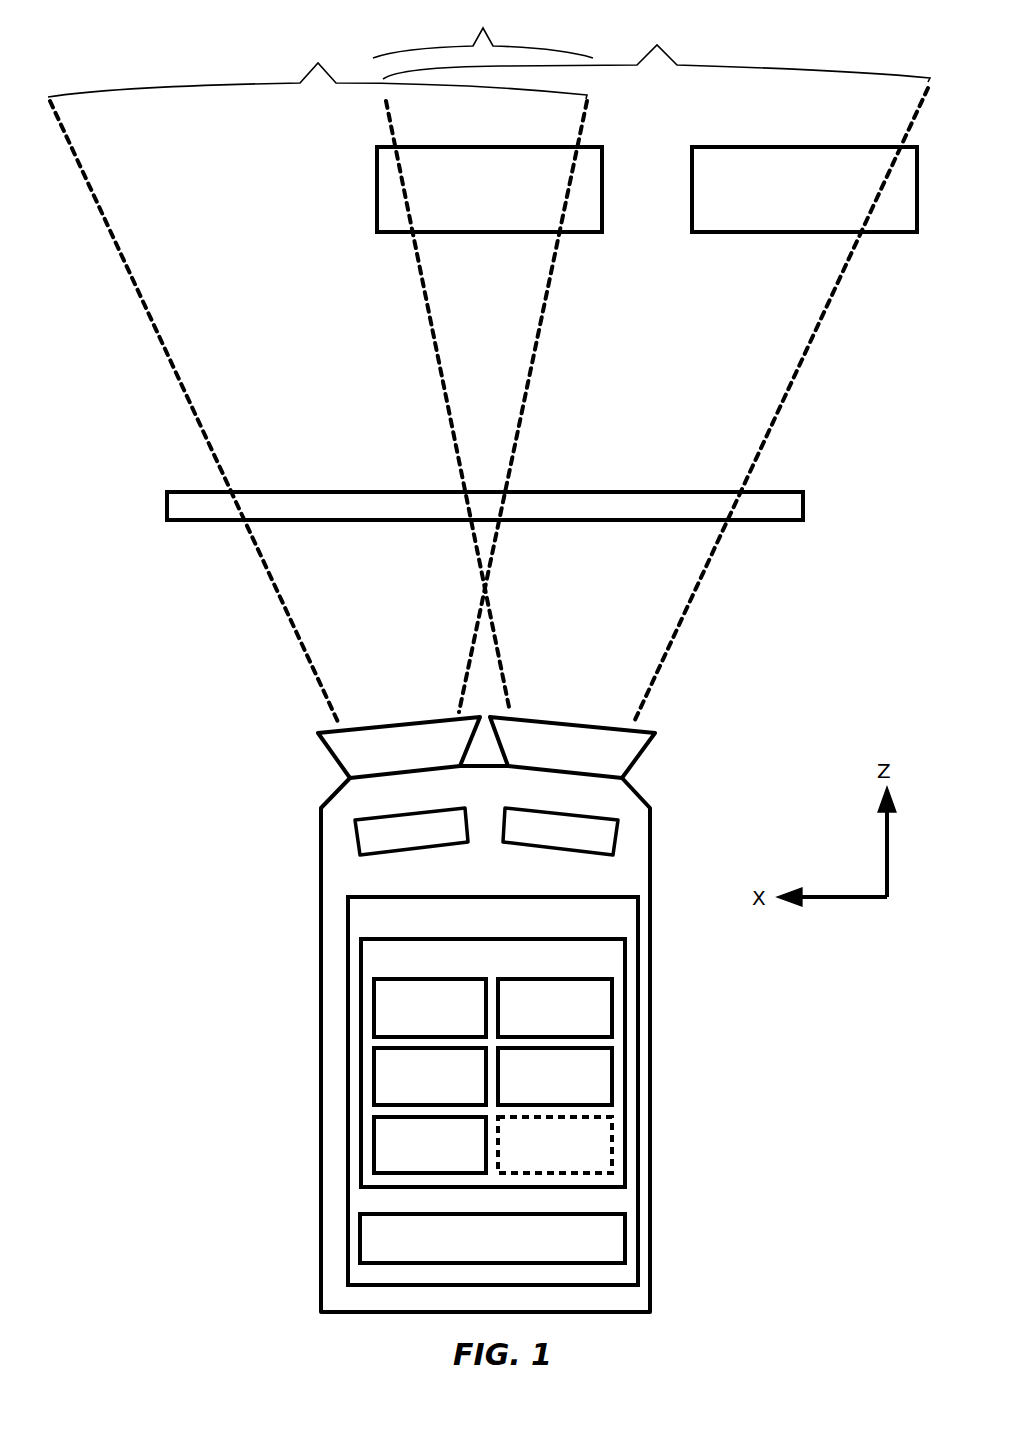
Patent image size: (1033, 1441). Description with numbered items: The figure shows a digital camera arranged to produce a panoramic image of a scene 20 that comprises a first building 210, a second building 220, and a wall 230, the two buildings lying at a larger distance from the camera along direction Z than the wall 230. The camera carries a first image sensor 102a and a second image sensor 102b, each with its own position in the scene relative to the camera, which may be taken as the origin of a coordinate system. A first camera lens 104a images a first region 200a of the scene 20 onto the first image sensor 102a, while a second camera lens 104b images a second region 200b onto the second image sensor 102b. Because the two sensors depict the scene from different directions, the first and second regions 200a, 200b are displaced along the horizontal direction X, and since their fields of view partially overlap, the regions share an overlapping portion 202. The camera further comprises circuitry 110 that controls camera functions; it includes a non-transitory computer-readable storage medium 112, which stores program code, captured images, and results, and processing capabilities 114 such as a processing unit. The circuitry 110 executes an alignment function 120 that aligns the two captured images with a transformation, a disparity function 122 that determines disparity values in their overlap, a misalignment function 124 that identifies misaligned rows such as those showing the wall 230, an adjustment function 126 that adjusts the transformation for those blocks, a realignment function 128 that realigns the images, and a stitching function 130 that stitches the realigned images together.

The scene 20 is at (135, 339).
The first region 200a is at (317, 370).
The second region 200b is at (656, 361).
The overlapping portion 202 is at (483, 29).
The first building 210 is at (398, 217).
The second building 220 is at (785, 218).
The wall 230 is at (203, 509).
The first image sensor 102a is at (375, 832).
The second image sensor 102b is at (600, 828).
The first camera lens 104a is at (360, 745).
The second camera lens 104b is at (610, 759).
The circuitry 110 is at (512, 931).
The non-transitory computer-readable storage medium 112 is at (512, 972).
The processing capabilities 114 is at (512, 1251).
The alignment function 120 is at (449, 1019).
The disparity function 122 is at (574, 1019).
The misalignment function 124 is at (449, 1087).
The adjustment function 126 is at (574, 1087).
The realignment function 128 is at (449, 1157).
The stitching function 130 is at (574, 1157).